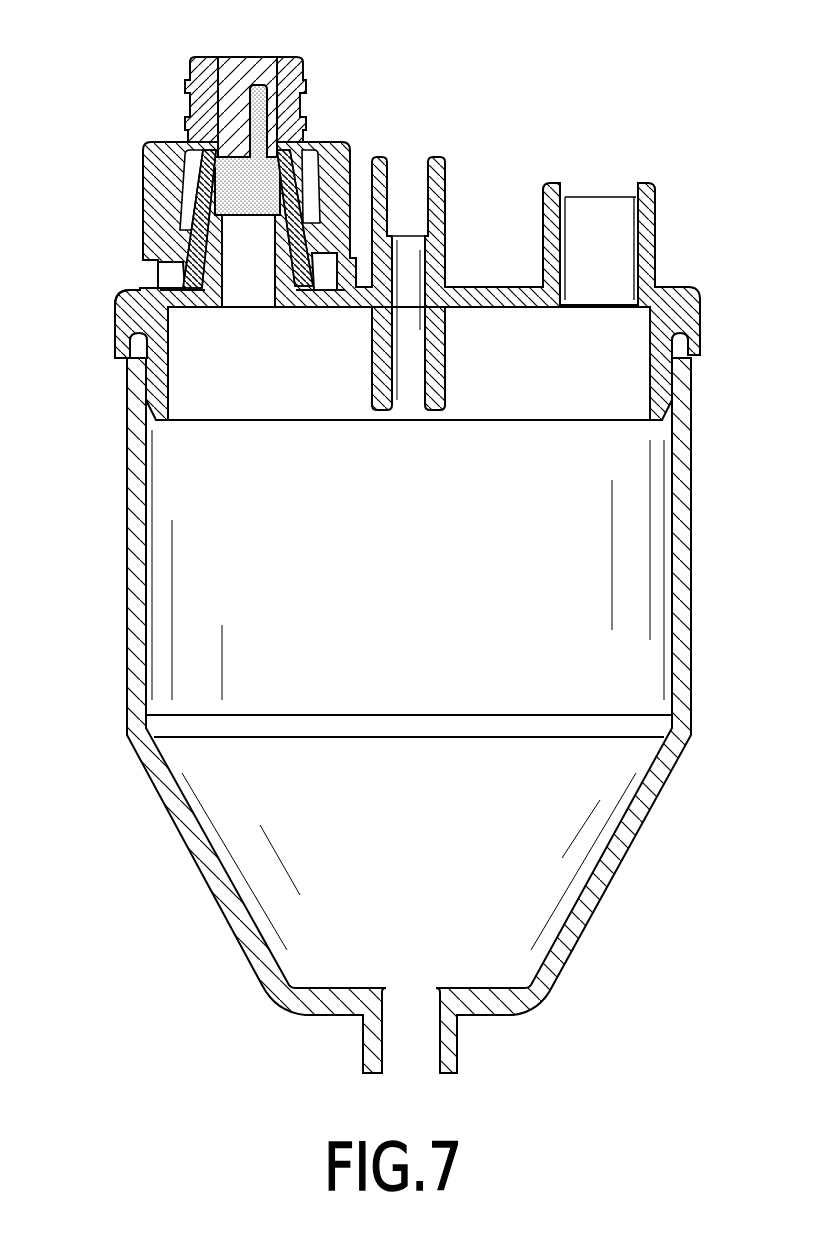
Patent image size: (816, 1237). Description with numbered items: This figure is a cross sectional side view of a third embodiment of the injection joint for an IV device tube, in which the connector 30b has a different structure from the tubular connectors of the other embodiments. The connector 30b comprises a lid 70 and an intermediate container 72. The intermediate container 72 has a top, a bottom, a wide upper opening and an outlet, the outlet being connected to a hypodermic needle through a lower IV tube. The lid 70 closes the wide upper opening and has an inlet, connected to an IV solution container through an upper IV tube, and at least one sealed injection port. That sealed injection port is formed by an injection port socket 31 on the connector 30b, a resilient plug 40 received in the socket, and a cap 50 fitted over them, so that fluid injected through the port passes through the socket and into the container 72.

The intermediate container 72 is at (683, 578).
The injection port socket 31 is at (140, 268).
The lid 70 is at (657, 330).
The connector 30b is at (112, 308).
The cap 50 is at (291, 73).
The resilient plug 40 is at (302, 187).